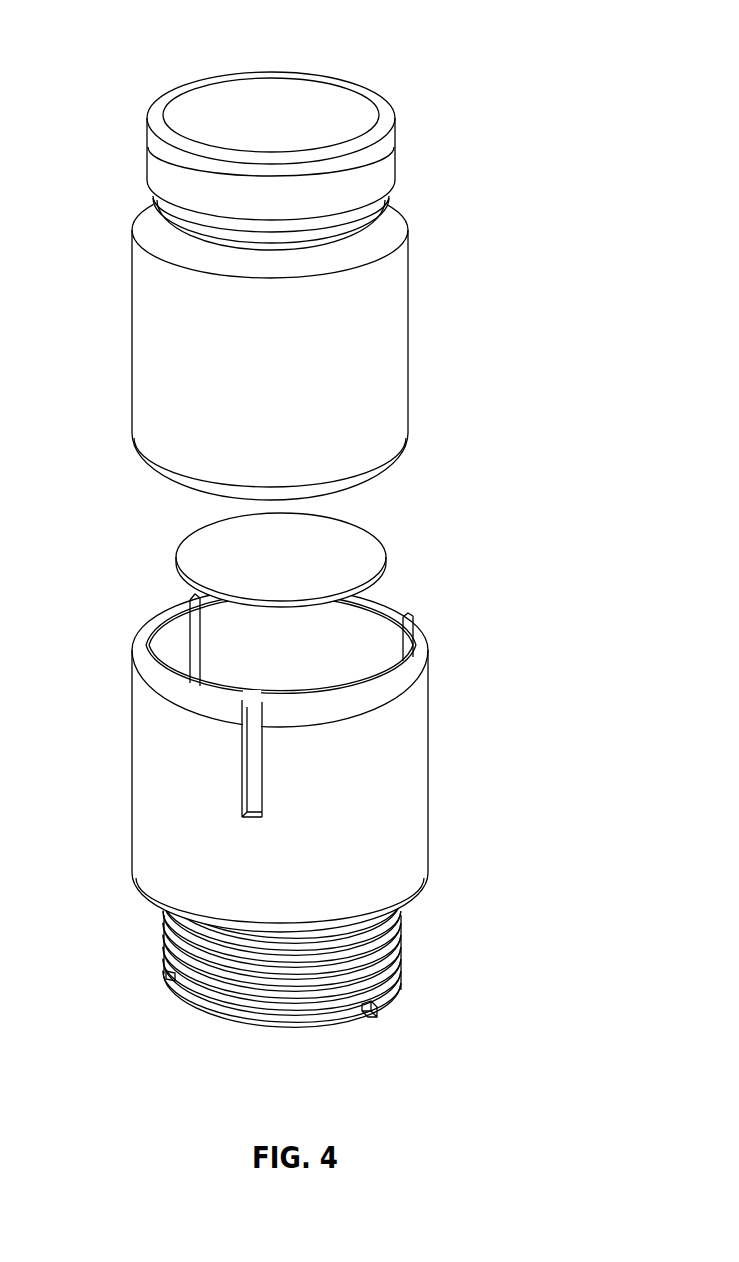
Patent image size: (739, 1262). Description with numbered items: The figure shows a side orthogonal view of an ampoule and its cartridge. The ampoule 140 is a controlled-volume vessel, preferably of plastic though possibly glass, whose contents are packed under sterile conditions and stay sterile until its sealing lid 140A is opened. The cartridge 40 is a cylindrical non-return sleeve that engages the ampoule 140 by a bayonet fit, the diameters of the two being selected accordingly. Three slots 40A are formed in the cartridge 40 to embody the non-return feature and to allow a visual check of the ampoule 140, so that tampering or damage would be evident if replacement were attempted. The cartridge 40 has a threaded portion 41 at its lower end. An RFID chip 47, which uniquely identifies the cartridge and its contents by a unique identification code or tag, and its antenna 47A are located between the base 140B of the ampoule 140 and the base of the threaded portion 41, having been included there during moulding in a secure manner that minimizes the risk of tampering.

The sealing lid 140A is at (330, 113).
The ampoule 140 is at (408, 346).
The base of ampoule 140B is at (383, 470).
The RFID chip 47 is at (387, 553).
The antenna 47A is at (388, 562).
The cartridge 40 is at (415, 807).
The slots 40A is at (148, 628).
The threaded portion 41 is at (377, 1010).